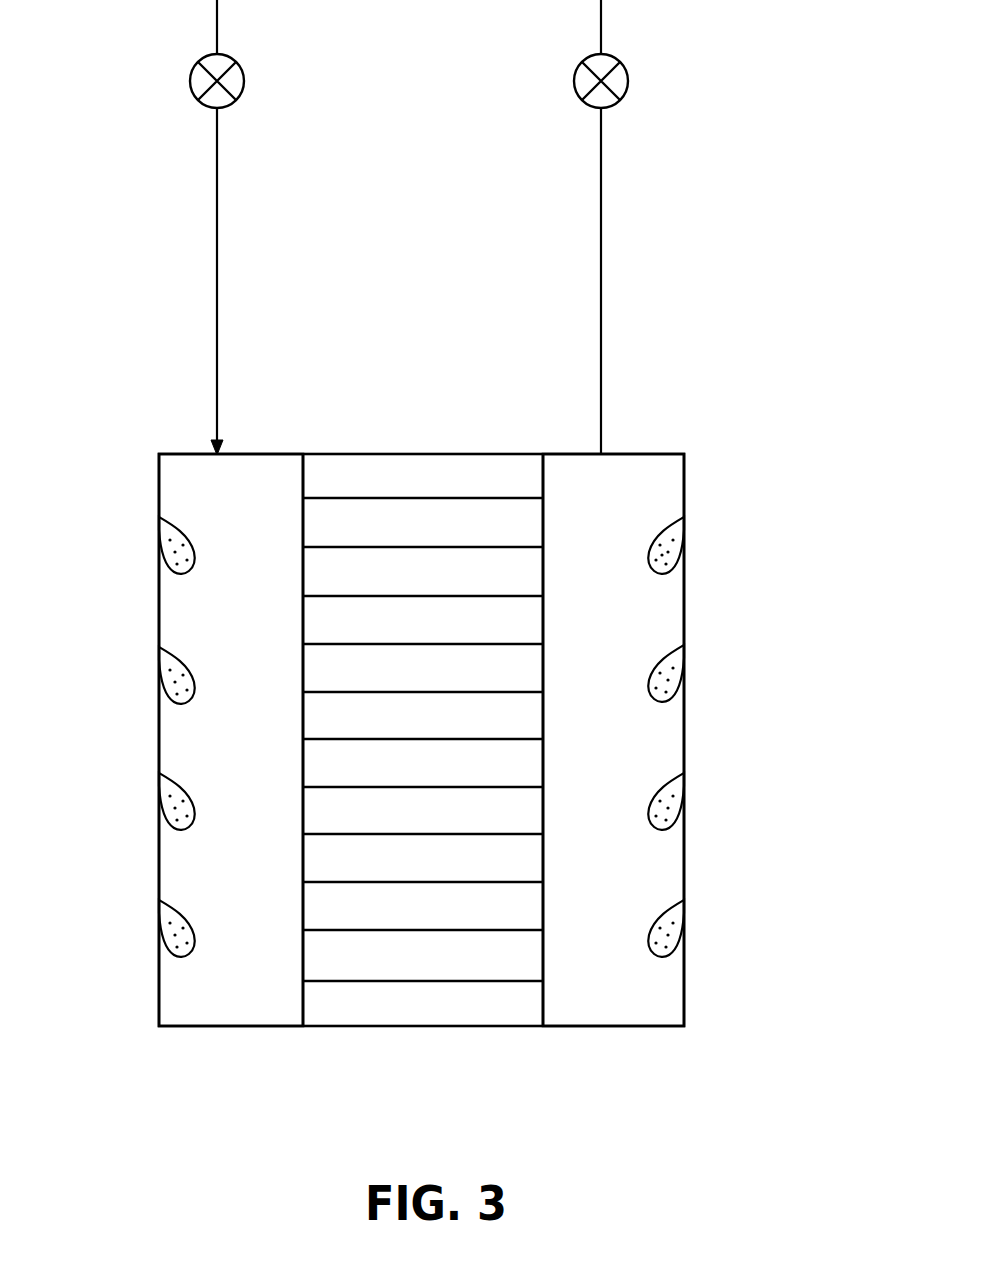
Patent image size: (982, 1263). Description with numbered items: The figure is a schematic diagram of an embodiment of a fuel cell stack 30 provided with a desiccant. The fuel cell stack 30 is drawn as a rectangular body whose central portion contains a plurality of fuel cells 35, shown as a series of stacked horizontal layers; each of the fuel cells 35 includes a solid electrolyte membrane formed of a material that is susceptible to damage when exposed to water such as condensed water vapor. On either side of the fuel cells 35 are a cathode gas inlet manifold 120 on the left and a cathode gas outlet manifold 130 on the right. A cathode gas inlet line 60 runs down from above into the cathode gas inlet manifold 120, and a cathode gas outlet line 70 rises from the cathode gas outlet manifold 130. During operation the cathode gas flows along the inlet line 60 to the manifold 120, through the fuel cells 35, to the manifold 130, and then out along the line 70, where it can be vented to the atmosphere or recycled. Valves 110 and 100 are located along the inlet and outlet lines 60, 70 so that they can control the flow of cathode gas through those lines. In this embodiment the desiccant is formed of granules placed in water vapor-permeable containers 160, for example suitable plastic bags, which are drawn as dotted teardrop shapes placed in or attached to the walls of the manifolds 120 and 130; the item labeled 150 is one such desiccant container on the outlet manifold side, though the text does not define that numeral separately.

The fuel cell stack 30 is at (797, 643).
The fuel cells 35 is at (362, 964).
The cathode gas inlet line 60 is at (217, 253).
The cathode gas outlet line 70 is at (601, 261).
The valve 100 is at (574, 80).
The valve 110 is at (190, 80).
The cathode gas inlet manifold 120 is at (182, 862).
The cathode gas outlet manifold 130 is at (663, 732).
The water droplet 150 is at (670, 549).
The water vapor-permeable containers 160 is at (178, 551).